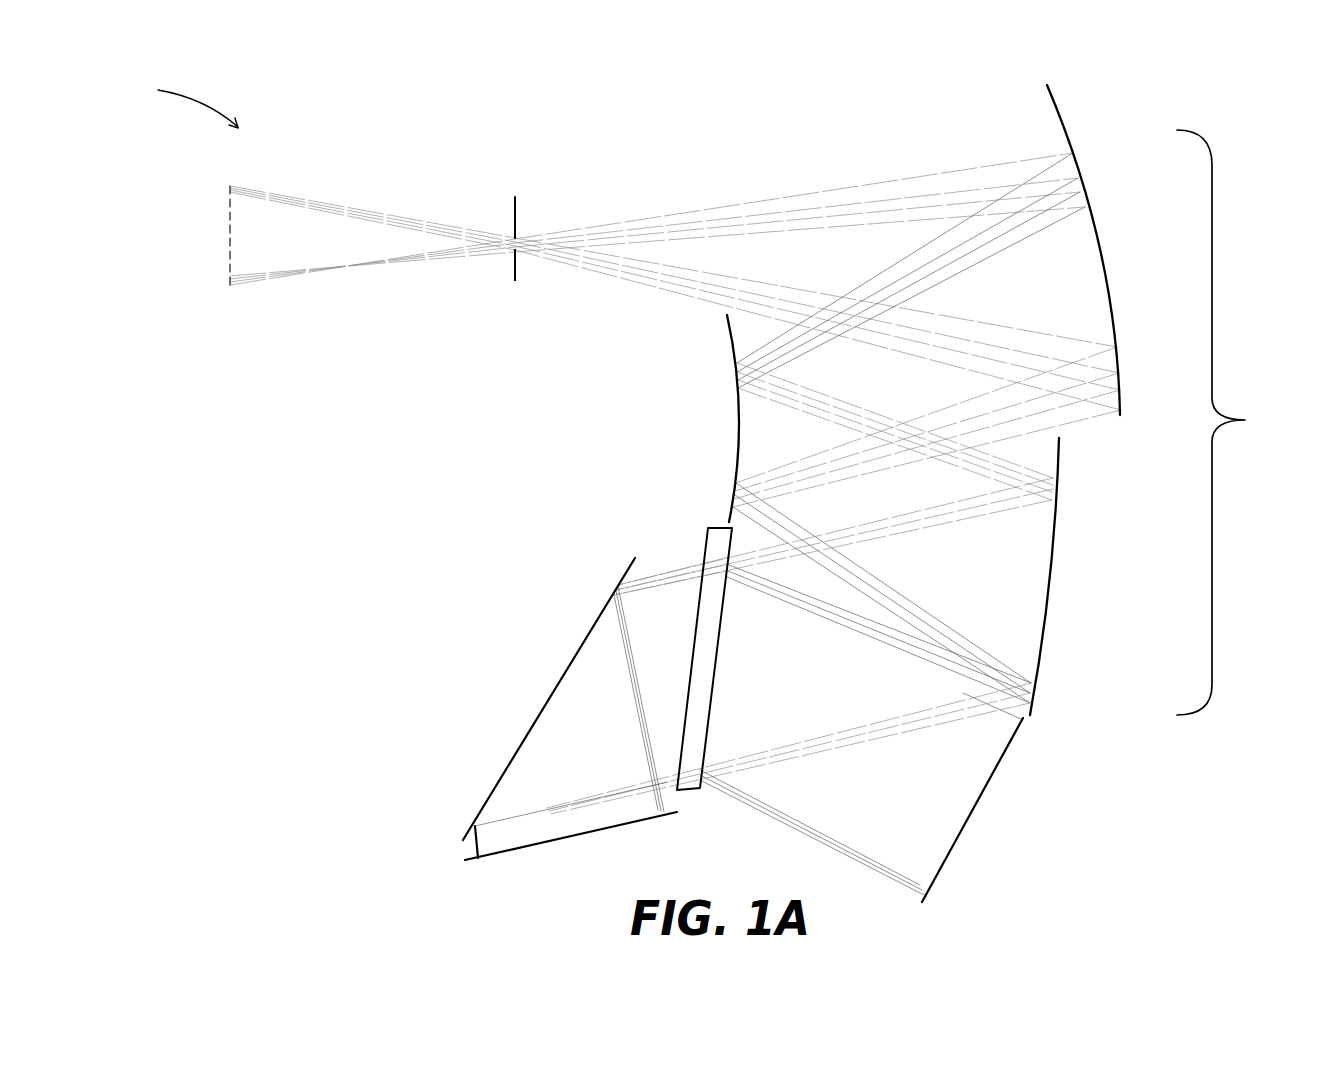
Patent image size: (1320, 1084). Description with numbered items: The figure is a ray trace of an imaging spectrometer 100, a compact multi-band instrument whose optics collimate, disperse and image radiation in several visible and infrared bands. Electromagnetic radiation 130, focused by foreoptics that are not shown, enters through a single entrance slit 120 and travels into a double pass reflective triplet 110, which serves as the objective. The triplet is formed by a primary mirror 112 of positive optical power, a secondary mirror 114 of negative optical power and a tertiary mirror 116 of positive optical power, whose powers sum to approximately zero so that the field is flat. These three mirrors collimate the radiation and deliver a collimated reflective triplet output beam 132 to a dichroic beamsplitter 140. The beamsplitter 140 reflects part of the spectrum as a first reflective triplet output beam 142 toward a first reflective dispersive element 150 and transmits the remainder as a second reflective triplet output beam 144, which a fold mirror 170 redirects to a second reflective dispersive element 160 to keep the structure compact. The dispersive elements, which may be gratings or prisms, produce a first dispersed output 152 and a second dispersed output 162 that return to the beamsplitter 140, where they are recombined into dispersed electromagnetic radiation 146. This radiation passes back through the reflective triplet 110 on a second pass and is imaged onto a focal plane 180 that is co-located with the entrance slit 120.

The imaging spectrometer 100 is at (173, 104).
The double pass reflective triplet 110 is at (1238, 422).
The primary mirror 112 is at (1064, 122).
The secondary mirror 114 is at (737, 440).
The tertiary mirror 116 is at (1051, 588).
The entrance slit 120 is at (516, 207).
The electromagnetic radiation 130 is at (322, 197).
The collimated reflective triplet output beam 132 is at (902, 533).
The dichroic beamsplitter 140 is at (712, 527).
The first reflective triplet output beam 142 is at (858, 647).
The second reflective triplet output beam 144 is at (672, 572).
The dispersed electromagnetic radiation 146 is at (860, 742).
The first reflective dispersive element 150 is at (970, 815).
The first dispersed output 152 is at (812, 827).
The second reflective dispersive element 160 is at (603, 830).
The second dispersed output 162 is at (547, 803).
The fold mirror 170 is at (560, 683).
The focal plane 180 is at (515, 271).